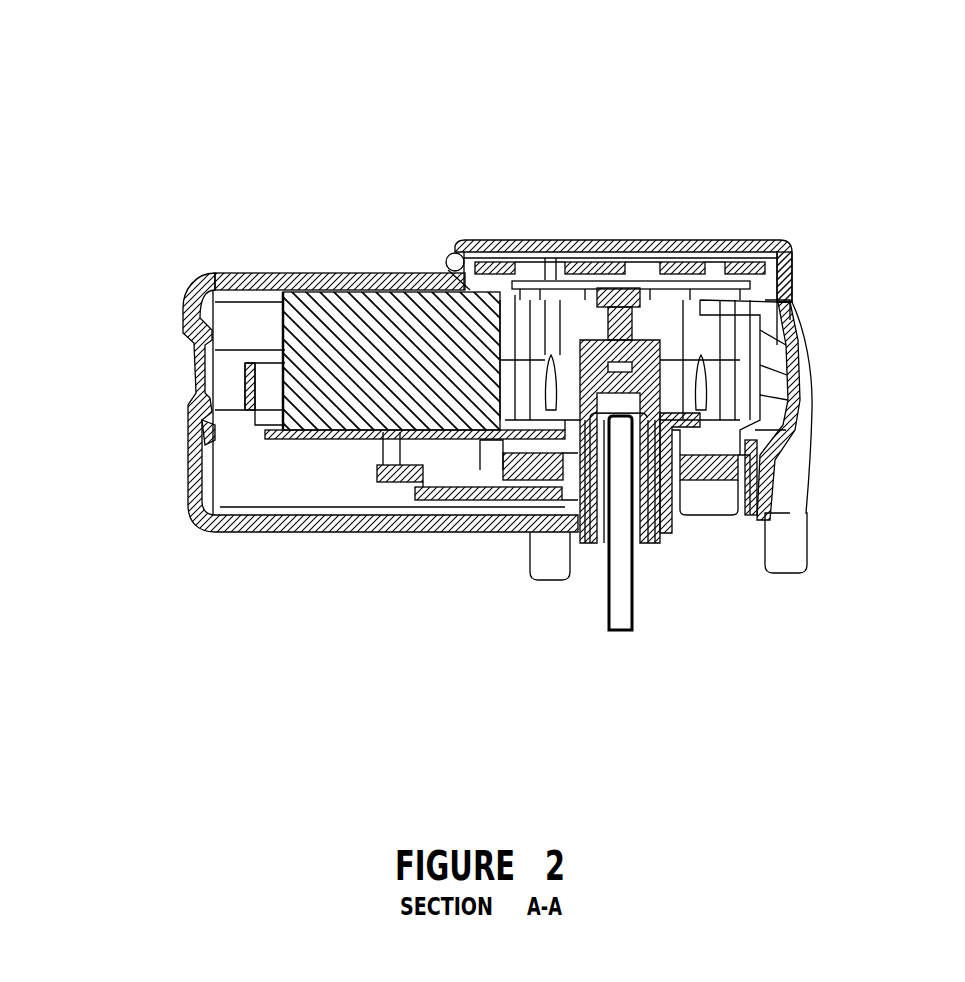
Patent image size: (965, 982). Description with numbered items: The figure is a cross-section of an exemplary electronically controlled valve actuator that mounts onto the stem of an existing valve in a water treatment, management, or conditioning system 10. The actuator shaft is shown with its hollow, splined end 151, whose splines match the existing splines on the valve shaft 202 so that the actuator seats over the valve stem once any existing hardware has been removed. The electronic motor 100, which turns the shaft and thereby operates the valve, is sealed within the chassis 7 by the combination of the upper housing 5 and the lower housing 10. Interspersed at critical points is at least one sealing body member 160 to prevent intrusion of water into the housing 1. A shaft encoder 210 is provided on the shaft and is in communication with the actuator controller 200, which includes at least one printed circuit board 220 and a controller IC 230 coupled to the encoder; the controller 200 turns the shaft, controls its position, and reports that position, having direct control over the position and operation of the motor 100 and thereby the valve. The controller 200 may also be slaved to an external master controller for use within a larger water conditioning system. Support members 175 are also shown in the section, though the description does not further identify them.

The housing 1 is at (195, 290).
The upper housing 5 is at (797, 510).
The chassis 7 is at (205, 433).
The lower housing 10 is at (525, 242).
The electronic motor 100 is at (347, 322).
The hollow splined end 151 is at (592, 541).
The sealing body member 160 is at (680, 420).
The support plates 175 is at (513, 493).
The actuator controller 200 is at (791, 280).
The valve shaft 202 is at (622, 510).
The shaft encoder 210 is at (633, 318).
The printed circuit board 220 is at (697, 252).
The controller IC 230 is at (615, 240).